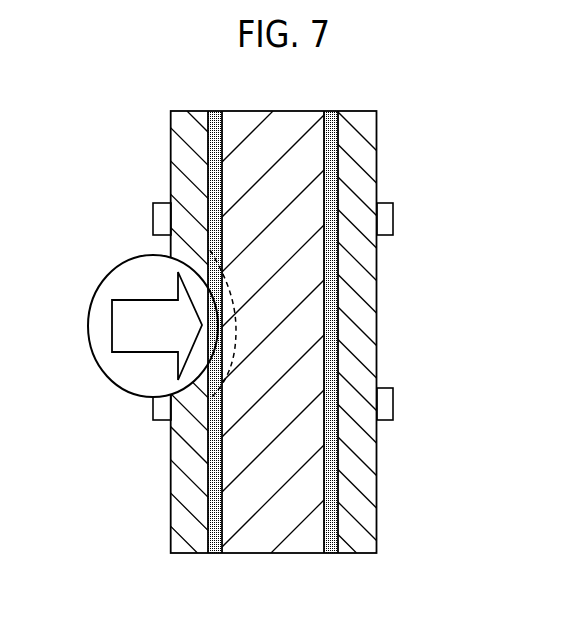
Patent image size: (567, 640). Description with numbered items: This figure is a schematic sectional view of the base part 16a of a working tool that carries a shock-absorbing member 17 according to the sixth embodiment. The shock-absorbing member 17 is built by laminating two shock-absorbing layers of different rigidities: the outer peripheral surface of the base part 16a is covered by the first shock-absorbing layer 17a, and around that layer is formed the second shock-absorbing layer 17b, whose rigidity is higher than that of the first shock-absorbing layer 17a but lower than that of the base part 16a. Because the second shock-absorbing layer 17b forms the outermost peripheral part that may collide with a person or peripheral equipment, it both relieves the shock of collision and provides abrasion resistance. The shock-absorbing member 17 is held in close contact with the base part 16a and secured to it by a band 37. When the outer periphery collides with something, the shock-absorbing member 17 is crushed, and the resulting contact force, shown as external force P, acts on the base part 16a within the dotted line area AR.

The shock-absorbing member 17 is at (63, 77).
The first shock-absorbing layer 17a is at (217, 114).
The second shock-absorbing layer 17b is at (182, 153).
The base part 16a is at (235, 522).
The band 37 is at (163, 220).
The dotted line area AR is at (236, 330).
The external force P is at (155, 332).